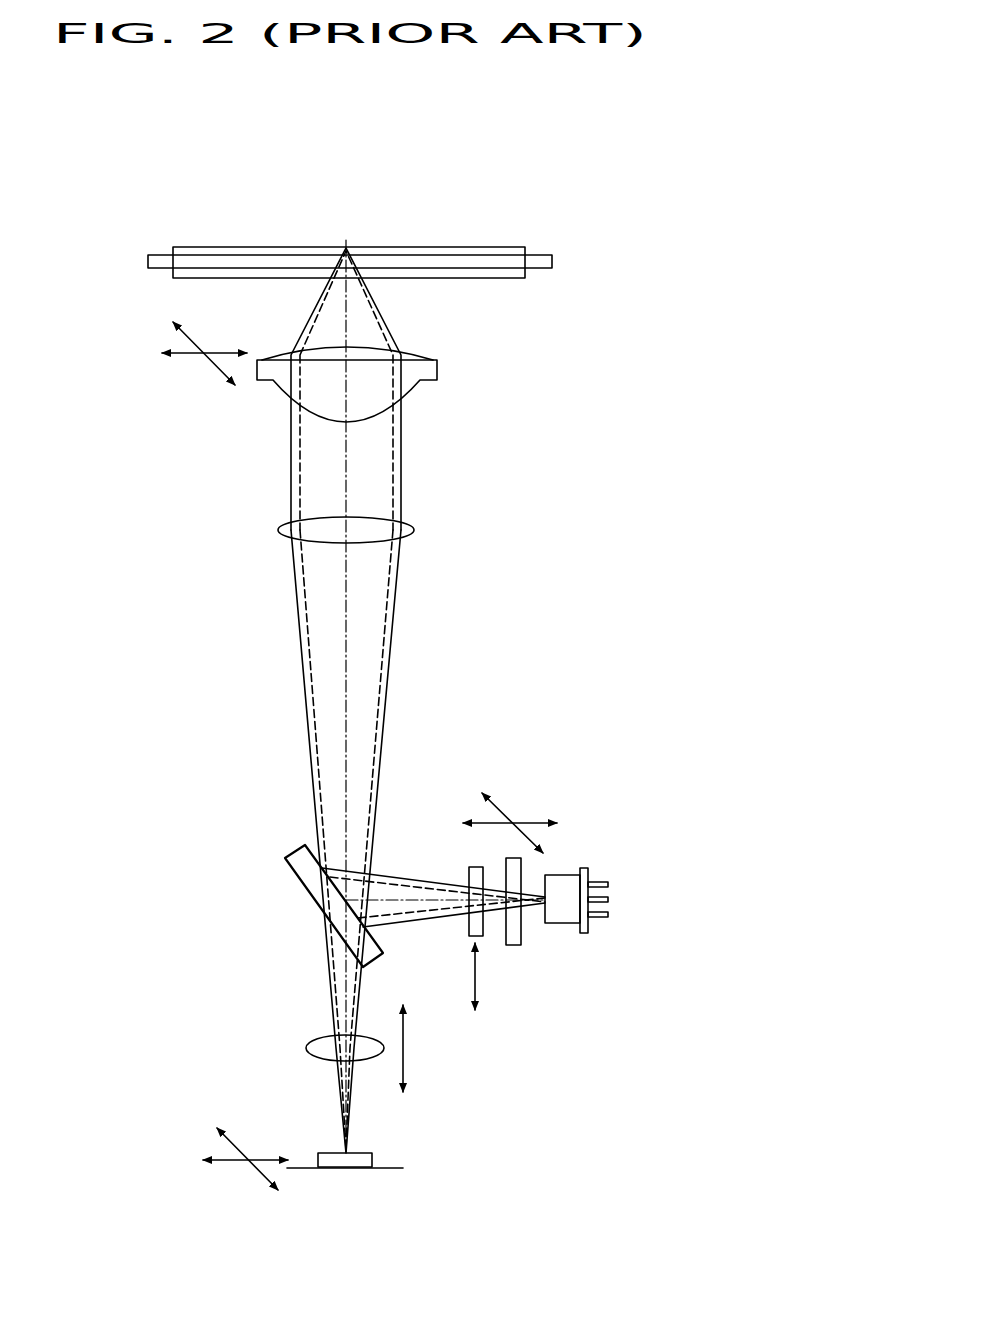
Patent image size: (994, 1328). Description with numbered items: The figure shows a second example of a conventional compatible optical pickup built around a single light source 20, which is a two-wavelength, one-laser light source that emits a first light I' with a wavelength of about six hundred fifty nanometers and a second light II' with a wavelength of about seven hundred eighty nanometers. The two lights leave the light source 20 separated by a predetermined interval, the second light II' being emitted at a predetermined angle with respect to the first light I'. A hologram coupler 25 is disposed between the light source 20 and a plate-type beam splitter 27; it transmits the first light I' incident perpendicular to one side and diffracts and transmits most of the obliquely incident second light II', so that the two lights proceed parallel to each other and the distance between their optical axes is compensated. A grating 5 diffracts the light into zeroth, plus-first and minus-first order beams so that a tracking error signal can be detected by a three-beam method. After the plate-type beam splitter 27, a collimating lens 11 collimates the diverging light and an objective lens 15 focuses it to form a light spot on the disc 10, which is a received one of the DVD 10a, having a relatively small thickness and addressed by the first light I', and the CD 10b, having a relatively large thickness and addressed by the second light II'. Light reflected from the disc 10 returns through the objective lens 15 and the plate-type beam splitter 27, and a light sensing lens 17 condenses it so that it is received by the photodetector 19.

The disc 10 is at (414, 213).
The DVD 10a is at (552, 262).
The CD 10b is at (488, 247).
The objective lens 15 is at (437, 369).
The collimating lens 11 is at (413, 530).
The plate-type beam splitter 27 is at (298, 881).
The grating 5 is at (478, 867).
The hologram coupler 25 is at (513, 945).
The light source 20 is at (562, 923).
The light sensing lens 17 is at (307, 1048).
The photodetector 19 is at (372, 1160).
The first light I' is at (451, 943).
The second light II' is at (437, 859).